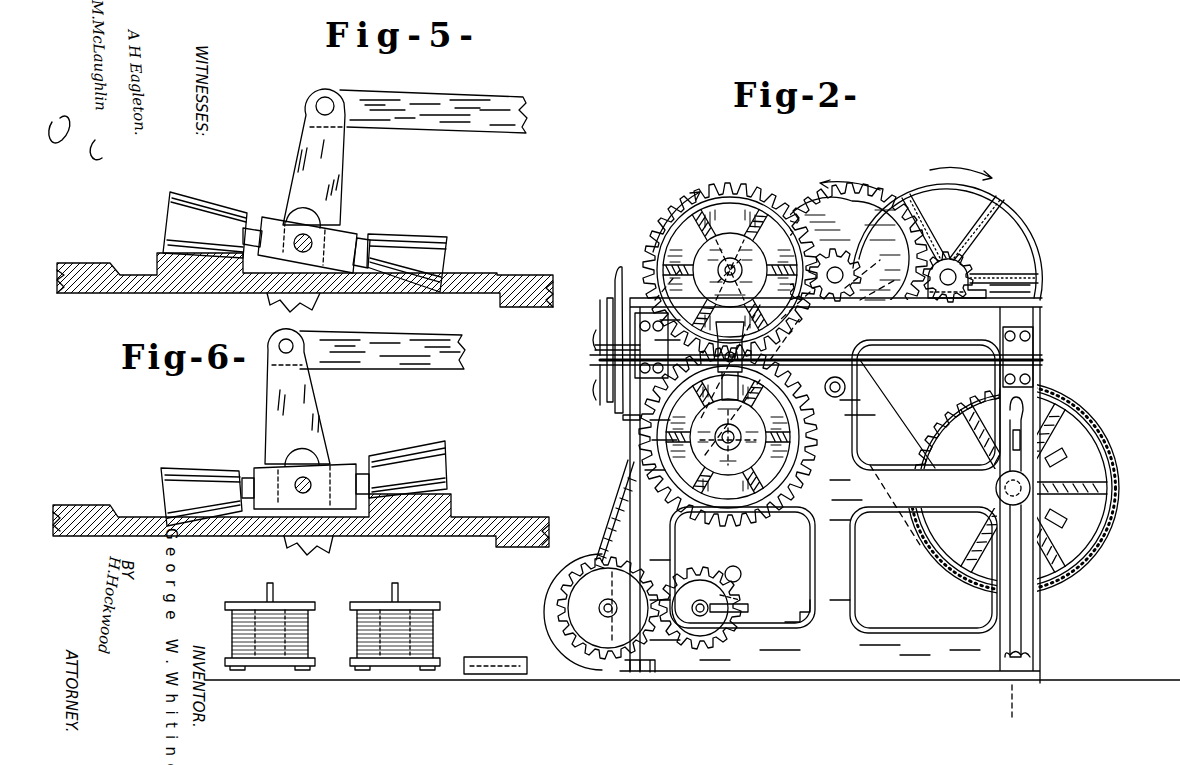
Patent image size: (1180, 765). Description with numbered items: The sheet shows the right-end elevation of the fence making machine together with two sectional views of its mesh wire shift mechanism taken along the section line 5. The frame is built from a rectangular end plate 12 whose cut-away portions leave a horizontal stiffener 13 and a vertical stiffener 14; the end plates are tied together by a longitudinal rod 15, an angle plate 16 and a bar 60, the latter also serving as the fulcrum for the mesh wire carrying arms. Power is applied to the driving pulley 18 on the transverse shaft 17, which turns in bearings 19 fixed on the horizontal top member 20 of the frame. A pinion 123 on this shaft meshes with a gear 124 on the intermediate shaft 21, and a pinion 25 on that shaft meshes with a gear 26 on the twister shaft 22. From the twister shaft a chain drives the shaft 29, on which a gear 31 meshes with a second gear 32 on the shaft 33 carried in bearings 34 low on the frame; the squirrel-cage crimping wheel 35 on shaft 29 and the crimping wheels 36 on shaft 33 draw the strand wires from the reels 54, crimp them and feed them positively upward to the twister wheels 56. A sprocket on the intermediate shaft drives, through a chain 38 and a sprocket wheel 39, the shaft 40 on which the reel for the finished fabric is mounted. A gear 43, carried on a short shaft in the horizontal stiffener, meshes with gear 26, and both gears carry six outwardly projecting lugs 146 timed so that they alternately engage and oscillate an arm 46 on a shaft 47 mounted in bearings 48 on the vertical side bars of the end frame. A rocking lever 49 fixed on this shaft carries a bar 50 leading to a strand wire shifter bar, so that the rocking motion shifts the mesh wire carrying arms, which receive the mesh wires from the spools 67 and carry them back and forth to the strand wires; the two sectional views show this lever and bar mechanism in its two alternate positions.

In FIG. 2, the section line 5 is at (728, 349).
In FIG. 2, the end plate 12 is at (692, 490).
In FIG. 2, the horizontal stiffener 13 is at (905, 542).
In FIG. 2, the vertical stiffener 14 is at (850, 575).
In FIG. 2, the longitudinal rod 15 is at (846, 388).
In FIG. 2, the angle plate 16 is at (797, 603).
In FIG. 2, the transverse shaft 17 is at (948, 269).
In FIG. 2, the driving pulley 18 is at (1034, 232).
In FIG. 2, the bearing 19 is at (972, 270).
In FIG. 2, the horizontal top member 20 is at (895, 306).
In FIG. 2, the intermediate shaft 21 is at (835, 266).
In FIG. 2, the twister shaft 22 is at (722, 233).
In FIG. 2, the pinion 25 is at (848, 268).
In FIG. 2, the gear 26 is at (755, 192).
In FIG. 2, the shaft 29 is at (598, 609).
In FIG. 2, the gear 31 is at (600, 562).
In FIG. 2, the second gear 32 is at (738, 594).
In FIG. 2, the shaft 33 is at (702, 600).
In FIG. 2, the bearing 34 is at (748, 610).
In FIG. 2, the crimping wheel 35 is at (582, 565).
In FIG. 2, the crimping wheel 36 is at (738, 572).
In FIG. 2, the chain 38 is at (1080, 420).
In FIG. 2, the sprocket wheel 39 is at (1100, 455).
In FIG. 2, the shaft 40 is at (996, 490).
In FIG. 2, the gear 43 is at (815, 452).
In FIG. 5, the arm 46 is at (418, 250).
In FIG. 6, the arm 46 is at (415, 456).
In FIG. 5, the shaft 47 is at (313, 241).
In FIG. 6, the shaft 47 is at (285, 468).
In FIG. 2, the shaft 47 is at (836, 352).
In FIG. 2, the bearing 48 is at (636, 339).
In FIG. 5, the rocking lever 49 is at (332, 169).
In FIG. 6, the rocking lever 49 is at (305, 406).
In FIG. 2, the rocking lever 49 is at (620, 380).
In FIG. 5, the bar 50 is at (466, 112).
In FIG. 6, the bar 50 is at (400, 352).
In FIG. 2, the reel 54 is at (405, 620).
In FIG. 2, the twister wheel 56 is at (1052, 472).
In FIG. 2, the bar 60 is at (636, 402).
In FIG. 2, the spool 67 is at (292, 620).
In FIG. 2, the pinion 123 is at (962, 252).
In FIG. 2, the gear 124 is at (845, 216).
In FIG. 5, the lug 146 is at (165, 256).
In FIG. 6, the lug 146 is at (450, 500).
In FIG. 2, the lug 146 is at (672, 236).